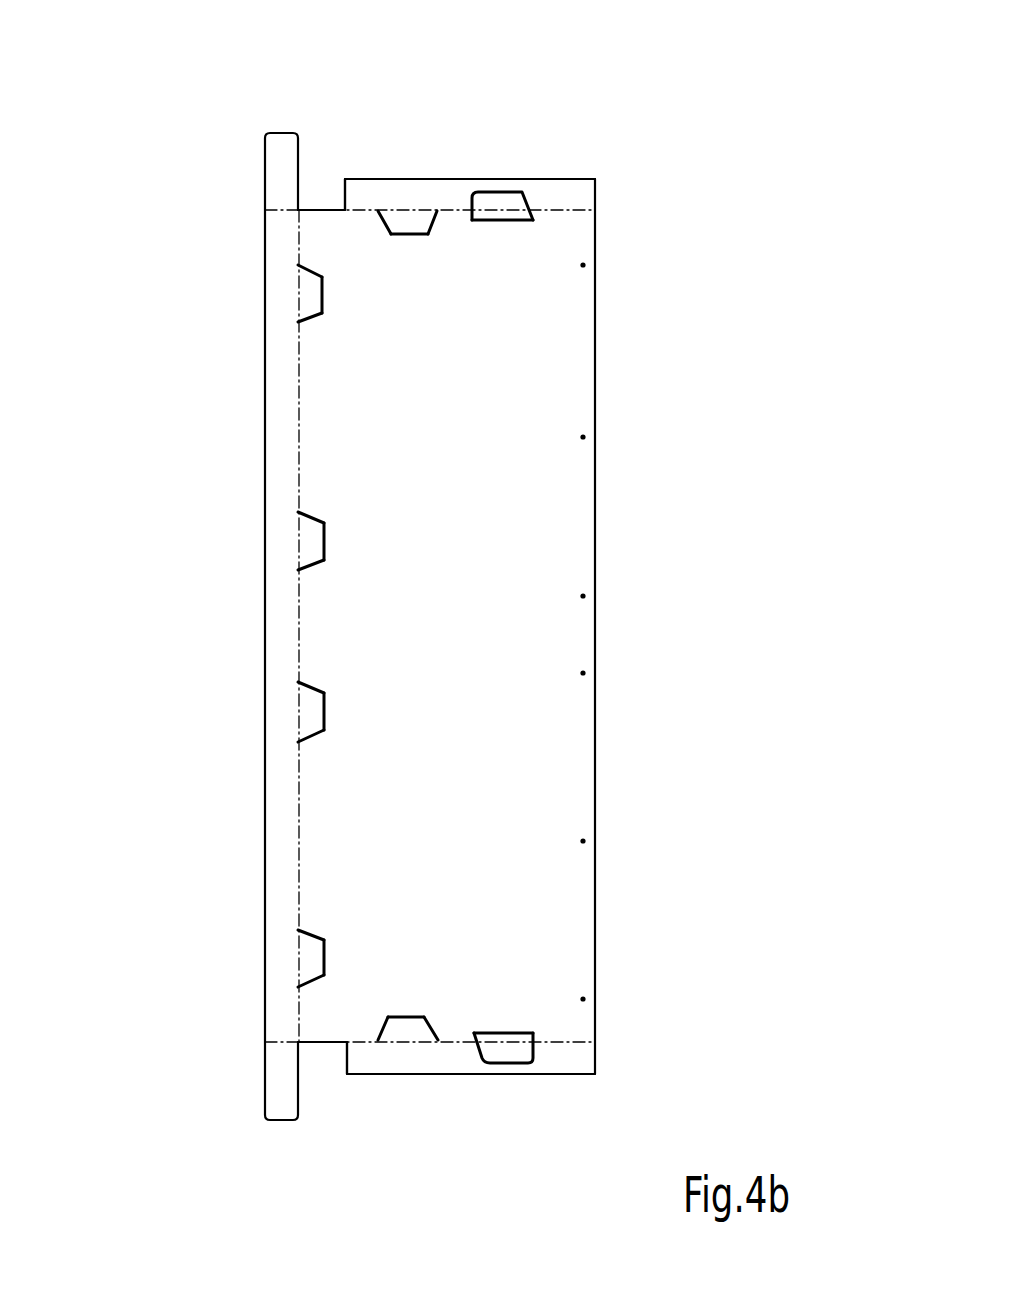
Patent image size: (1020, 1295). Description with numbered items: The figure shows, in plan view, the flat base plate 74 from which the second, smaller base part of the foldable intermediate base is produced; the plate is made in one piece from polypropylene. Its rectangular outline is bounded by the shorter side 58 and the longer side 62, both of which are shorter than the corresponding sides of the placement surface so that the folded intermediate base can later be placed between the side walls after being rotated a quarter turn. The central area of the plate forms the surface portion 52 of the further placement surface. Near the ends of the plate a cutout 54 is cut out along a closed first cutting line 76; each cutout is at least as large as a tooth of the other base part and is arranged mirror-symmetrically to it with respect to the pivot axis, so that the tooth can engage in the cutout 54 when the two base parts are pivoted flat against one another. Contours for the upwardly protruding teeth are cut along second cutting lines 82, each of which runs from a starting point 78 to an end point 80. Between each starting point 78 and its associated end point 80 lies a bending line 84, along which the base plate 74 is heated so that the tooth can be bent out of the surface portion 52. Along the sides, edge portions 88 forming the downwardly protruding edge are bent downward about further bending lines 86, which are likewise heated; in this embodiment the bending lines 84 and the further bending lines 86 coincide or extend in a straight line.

The surface portion 52 is at (482, 612).
The cutout 54 is at (535, 210).
The shorter side 58 is at (351, 205).
The longer side 62 is at (299, 613).
The base plate 74 is at (500, 126).
The first cutting line 76 is at (527, 195).
The starting point 78 is at (378, 212).
The end point 80 is at (437, 213).
The second cutting line 82 is at (404, 237).
The bending line 84 is at (409, 210).
The further bending line 86 is at (299, 445).
The edge portion 88 is at (447, 192).